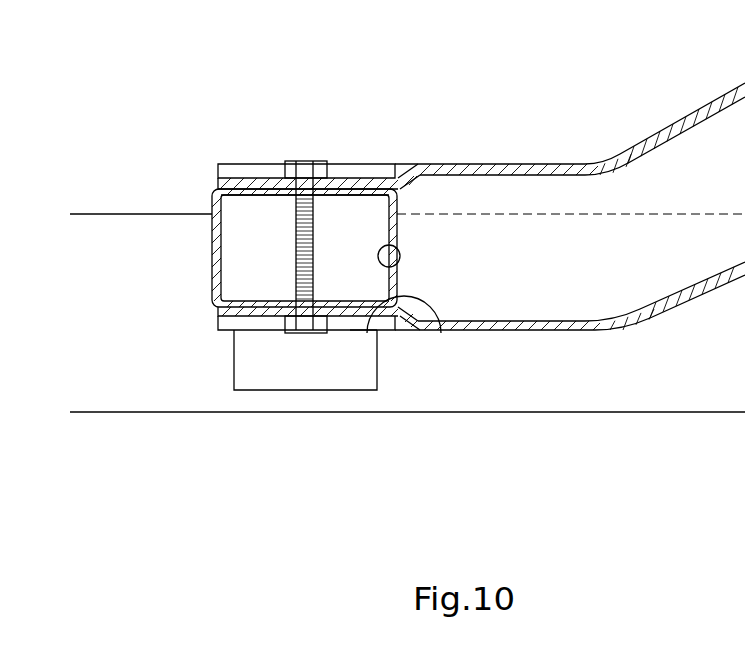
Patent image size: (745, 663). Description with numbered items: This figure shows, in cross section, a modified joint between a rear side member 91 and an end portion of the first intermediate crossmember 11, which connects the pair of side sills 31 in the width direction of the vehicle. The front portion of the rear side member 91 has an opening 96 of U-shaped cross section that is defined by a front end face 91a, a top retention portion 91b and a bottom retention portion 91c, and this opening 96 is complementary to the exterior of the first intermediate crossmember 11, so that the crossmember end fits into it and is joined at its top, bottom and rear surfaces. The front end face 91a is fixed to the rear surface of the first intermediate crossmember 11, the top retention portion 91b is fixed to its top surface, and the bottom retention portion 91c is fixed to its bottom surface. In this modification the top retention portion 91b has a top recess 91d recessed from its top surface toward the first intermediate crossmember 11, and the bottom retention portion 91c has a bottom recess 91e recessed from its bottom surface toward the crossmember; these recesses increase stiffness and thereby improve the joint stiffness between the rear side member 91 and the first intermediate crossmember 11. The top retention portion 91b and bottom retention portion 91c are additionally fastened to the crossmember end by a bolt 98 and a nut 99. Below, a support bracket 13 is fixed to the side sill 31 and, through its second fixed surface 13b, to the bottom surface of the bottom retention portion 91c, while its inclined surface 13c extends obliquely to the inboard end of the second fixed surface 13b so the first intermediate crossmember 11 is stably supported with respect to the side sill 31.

The rear side member 91 is at (681, 116).
The front end face 91a is at (397, 263).
The top retention portion 91b is at (240, 185).
The bottom retention portion 91c is at (355, 322).
The top recess 91d is at (360, 174).
The bottom recess 91e is at (232, 323).
The opening 96 is at (277, 193).
The bolt 98 is at (305, 167).
The nut 99 is at (303, 325).
The first intermediate crossmember 11 is at (211, 251).
The support bracket 13 is at (231, 347).
The second fixed surface 13b is at (441, 333).
The inclined surface 13c is at (370, 360).
The side sill 31 is at (118, 233).